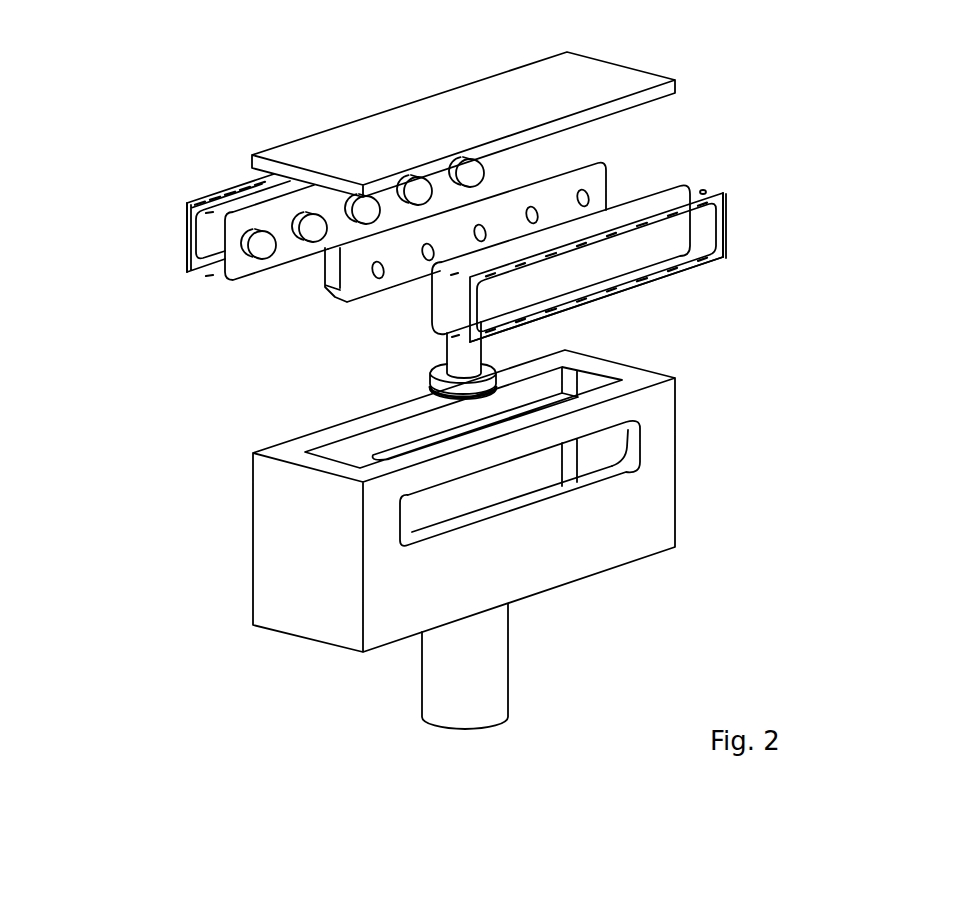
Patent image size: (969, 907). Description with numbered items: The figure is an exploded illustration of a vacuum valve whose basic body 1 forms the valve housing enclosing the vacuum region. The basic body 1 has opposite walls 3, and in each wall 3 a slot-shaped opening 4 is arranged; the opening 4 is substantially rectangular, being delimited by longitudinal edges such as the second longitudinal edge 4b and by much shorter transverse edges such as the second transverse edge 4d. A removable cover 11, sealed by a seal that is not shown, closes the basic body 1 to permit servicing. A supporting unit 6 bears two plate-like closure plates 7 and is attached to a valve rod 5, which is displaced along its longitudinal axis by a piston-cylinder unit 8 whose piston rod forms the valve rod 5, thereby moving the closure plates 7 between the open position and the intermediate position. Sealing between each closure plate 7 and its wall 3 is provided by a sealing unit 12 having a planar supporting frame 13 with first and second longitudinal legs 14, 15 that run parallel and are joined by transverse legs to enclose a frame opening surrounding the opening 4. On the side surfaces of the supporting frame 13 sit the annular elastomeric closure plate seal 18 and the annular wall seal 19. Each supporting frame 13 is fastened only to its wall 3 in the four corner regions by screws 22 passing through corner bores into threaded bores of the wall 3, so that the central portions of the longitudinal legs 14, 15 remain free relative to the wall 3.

The basic body 1 is at (246, 557).
The wall 3 is at (650, 500).
The opening 4 is at (437, 505).
The second longitudinal edge 4b is at (552, 486).
The second transverse edge 4d is at (624, 441).
The valve rod 5 is at (462, 352).
The supporting unit 6 is at (592, 183).
The closure plate 7 is at (242, 227).
The piston-cylinder unit 8 is at (516, 675).
The cover 11 is at (595, 78).
The sealing unit 12 is at (193, 275).
The supporting frame 13 is at (187, 208).
The first longitudinal leg 14 is at (617, 230).
The second longitudinal leg 15 is at (618, 294).
The closure plate seal 18 is at (220, 202).
The wall seal 19 is at (588, 301).
The screw 22 is at (705, 190).